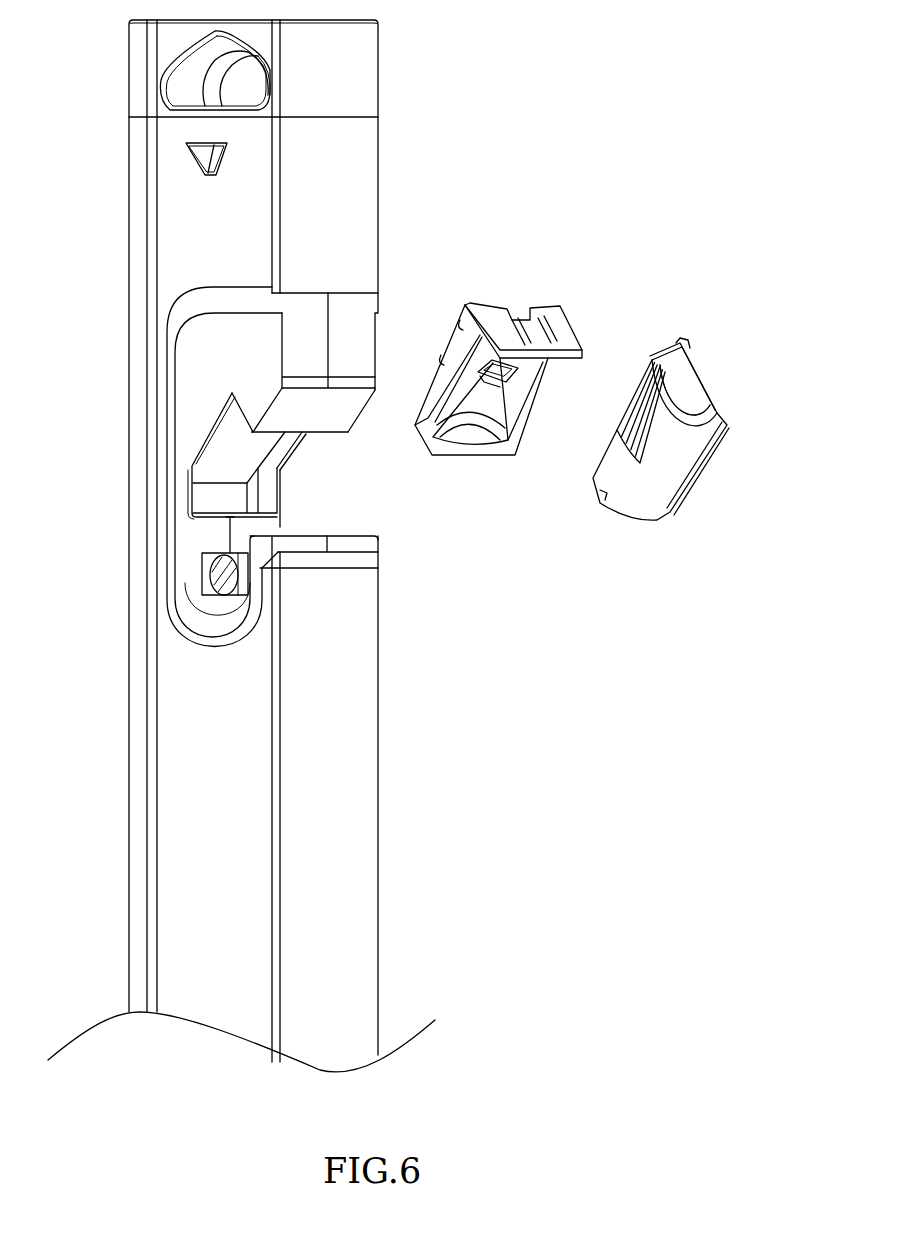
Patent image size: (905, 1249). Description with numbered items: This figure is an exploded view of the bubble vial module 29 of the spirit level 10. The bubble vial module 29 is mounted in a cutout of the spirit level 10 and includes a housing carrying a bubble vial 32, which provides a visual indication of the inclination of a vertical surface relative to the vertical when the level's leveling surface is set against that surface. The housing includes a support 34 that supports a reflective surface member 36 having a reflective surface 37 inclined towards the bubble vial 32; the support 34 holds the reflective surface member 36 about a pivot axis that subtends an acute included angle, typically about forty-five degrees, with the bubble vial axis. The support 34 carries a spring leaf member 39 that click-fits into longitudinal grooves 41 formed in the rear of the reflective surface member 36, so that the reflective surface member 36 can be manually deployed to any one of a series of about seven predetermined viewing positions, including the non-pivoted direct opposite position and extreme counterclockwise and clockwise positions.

The spirit level 10 is at (517, 57).
The bubble vial module 29 is at (358, 333).
The bubble vial 32 is at (213, 565).
The support 34 is at (555, 322).
The reflective surface member 36 is at (622, 507).
The reflective surface 37 is at (690, 385).
The spring leaf member 39 is at (525, 387).
The longitudinal grooves 41 is at (636, 400).